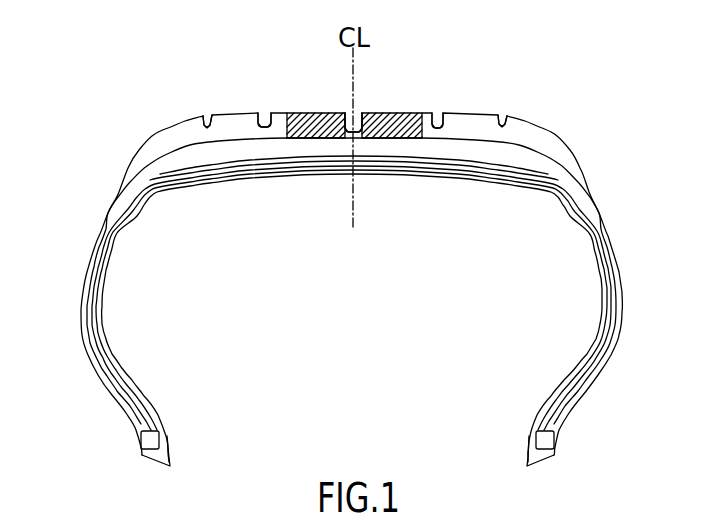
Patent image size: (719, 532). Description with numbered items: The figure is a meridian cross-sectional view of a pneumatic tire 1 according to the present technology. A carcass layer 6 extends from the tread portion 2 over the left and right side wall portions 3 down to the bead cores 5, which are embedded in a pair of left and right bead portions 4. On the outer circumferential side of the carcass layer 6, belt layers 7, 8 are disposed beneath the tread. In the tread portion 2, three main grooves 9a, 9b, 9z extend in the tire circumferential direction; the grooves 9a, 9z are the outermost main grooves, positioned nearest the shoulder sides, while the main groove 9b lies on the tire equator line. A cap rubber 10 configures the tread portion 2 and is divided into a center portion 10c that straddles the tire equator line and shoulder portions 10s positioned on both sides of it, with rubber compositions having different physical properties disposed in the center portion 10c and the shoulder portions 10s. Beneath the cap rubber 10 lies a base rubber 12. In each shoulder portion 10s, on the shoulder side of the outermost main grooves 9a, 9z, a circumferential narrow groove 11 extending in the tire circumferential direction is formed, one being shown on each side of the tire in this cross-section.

The pneumatic tire 1 is at (359, 274).
The tread portion 2 is at (155, 135).
The side wall portion 3 is at (76, 300).
The bead portion 4 is at (133, 430).
The bead core 5 is at (153, 440).
The carcass layer 6 is at (97, 265).
The belt layer 7 is at (177, 186).
The belt layer 8 is at (208, 190).
The main groove 9a is at (263, 116).
The main groove 9b is at (359, 120).
The main groove 9z is at (439, 127).
The cap rubber 10 is at (365, 268).
The center portion 10c is at (313, 138).
The shoulder portion 10s is at (250, 138).
The circumferential narrow groove 11 is at (206, 118).
The base rubber 12 is at (437, 148).